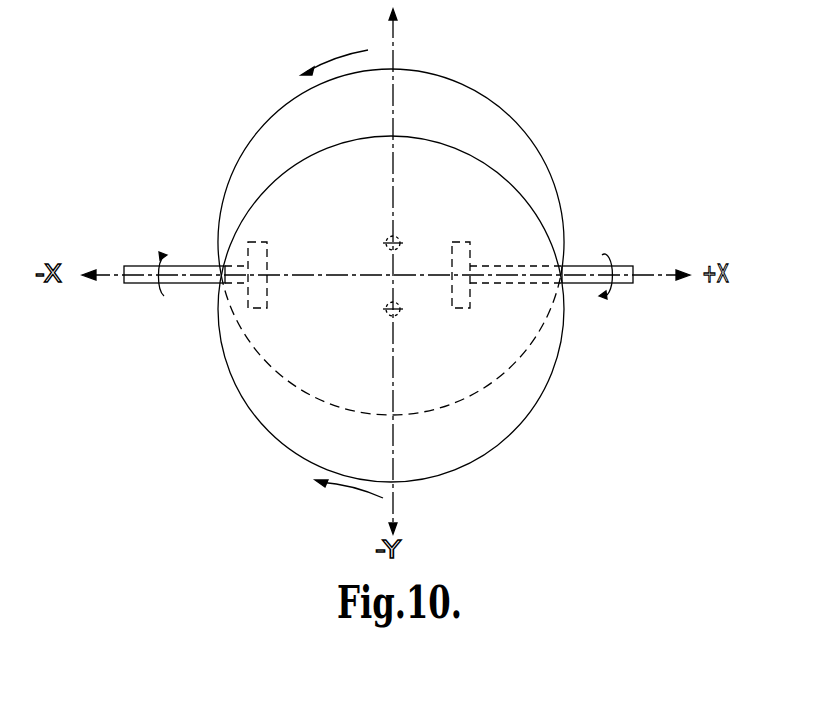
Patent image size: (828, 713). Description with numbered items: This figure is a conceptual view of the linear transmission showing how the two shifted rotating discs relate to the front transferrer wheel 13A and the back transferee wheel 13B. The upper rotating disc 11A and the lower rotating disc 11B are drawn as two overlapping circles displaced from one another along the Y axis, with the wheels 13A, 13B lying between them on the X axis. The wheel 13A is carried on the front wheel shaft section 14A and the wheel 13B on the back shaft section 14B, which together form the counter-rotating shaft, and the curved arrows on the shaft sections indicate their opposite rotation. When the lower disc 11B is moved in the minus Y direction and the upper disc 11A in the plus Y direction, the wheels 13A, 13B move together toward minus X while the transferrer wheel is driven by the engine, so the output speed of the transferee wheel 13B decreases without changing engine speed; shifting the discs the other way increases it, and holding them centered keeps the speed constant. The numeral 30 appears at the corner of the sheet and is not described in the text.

The upper rotating disc 11A is at (513, 431).
The lower rotating disc 11B is at (520, 127).
The front transferrer wheel 13A is at (247, 303).
The back transferee wheel 13B is at (470, 253).
The front wheel shaft section 14A is at (135, 265).
The back shaft section 14B is at (627, 287).
The sheet reference 30 is at (738, 697).